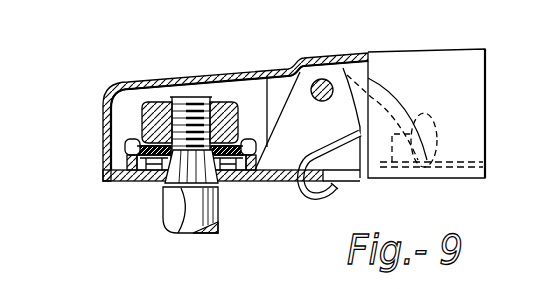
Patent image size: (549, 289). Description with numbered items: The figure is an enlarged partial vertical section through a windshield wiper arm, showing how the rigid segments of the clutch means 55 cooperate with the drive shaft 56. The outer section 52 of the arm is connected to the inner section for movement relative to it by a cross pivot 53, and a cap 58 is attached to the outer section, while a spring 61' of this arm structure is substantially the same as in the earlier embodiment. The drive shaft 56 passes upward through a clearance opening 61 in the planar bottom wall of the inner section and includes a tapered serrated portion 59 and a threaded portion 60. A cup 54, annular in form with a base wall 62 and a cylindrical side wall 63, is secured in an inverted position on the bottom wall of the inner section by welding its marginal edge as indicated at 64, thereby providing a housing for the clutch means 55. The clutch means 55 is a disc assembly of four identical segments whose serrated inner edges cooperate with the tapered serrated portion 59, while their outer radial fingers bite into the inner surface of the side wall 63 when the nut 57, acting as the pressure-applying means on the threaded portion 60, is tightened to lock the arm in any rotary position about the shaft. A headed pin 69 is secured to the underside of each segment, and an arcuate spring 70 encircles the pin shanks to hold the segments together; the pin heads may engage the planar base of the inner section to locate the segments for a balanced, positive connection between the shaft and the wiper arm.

The outer section of the arm 52 is at (453, 53).
The cross pivot 53 is at (322, 79).
The cup 54 is at (125, 143).
The clutch means 55 is at (130, 140).
The drive shaft 56 is at (223, 226).
The nut 57 is at (160, 101).
The cap 58 is at (112, 97).
The tapered serrated portion 59 is at (200, 233).
The threaded portion 60 is at (183, 104).
The clearance opening 61 is at (185, 203).
The spring 61' is at (307, 132).
The base wall 62 is at (135, 146).
The side wall 63 is at (127, 159).
The weld 64 is at (110, 172).
The headed pin 69 is at (158, 188).
The spring 70 is at (142, 183).